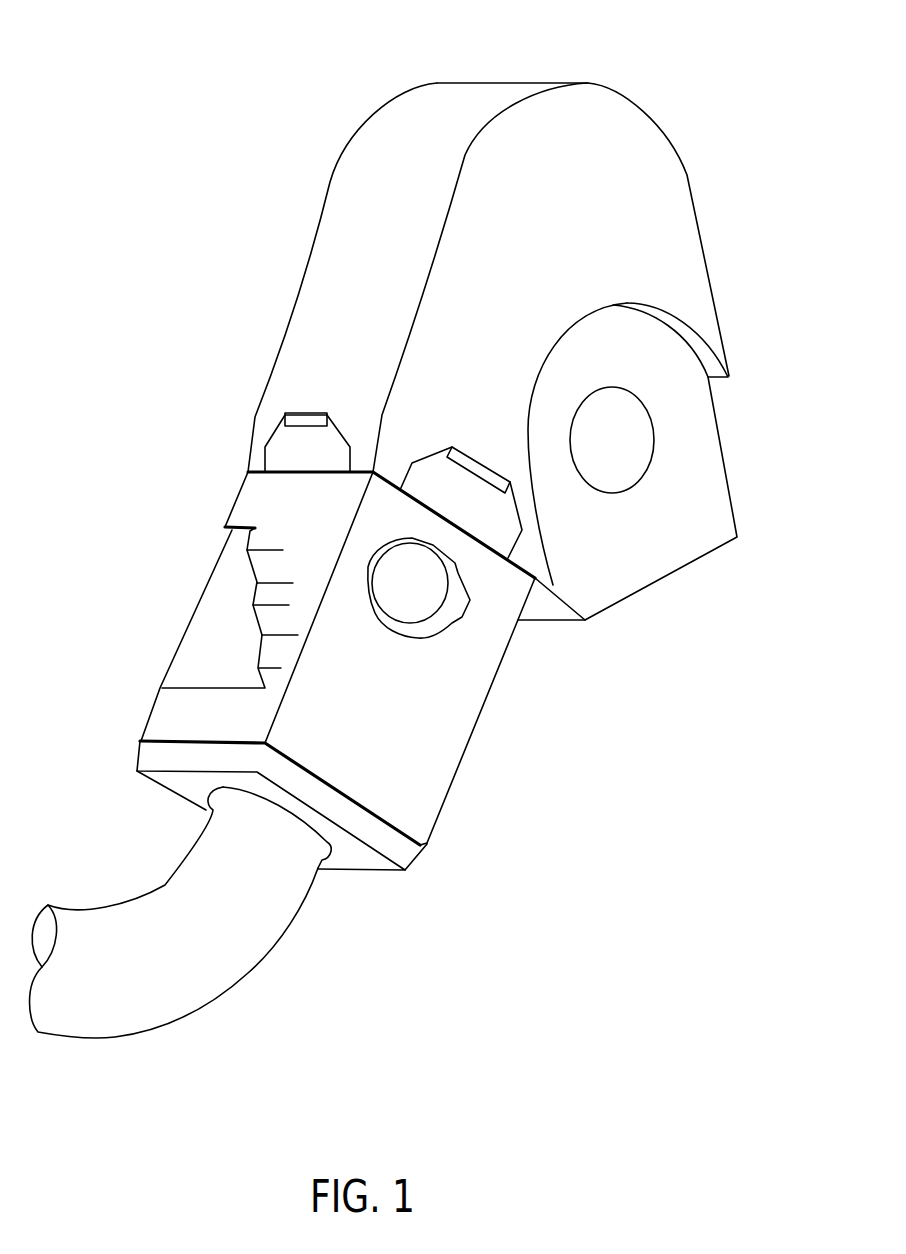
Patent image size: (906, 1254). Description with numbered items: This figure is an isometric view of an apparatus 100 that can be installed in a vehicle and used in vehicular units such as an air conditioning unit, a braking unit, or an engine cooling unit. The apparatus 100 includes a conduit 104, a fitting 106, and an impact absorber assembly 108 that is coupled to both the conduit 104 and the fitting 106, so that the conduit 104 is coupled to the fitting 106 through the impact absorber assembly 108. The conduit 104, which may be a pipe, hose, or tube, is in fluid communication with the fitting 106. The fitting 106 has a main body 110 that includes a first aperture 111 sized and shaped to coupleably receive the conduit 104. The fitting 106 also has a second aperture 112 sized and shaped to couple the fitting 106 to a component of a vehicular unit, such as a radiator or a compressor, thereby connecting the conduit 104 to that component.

The apparatus 100 is at (128, 128).
The conduit 104 is at (247, 933).
The fitting 106 is at (680, 232).
The impact absorber assembly 108 is at (472, 765).
The main body 110 is at (522, 83).
The first aperture 111 is at (465, 630).
The second aperture 112 is at (620, 443).